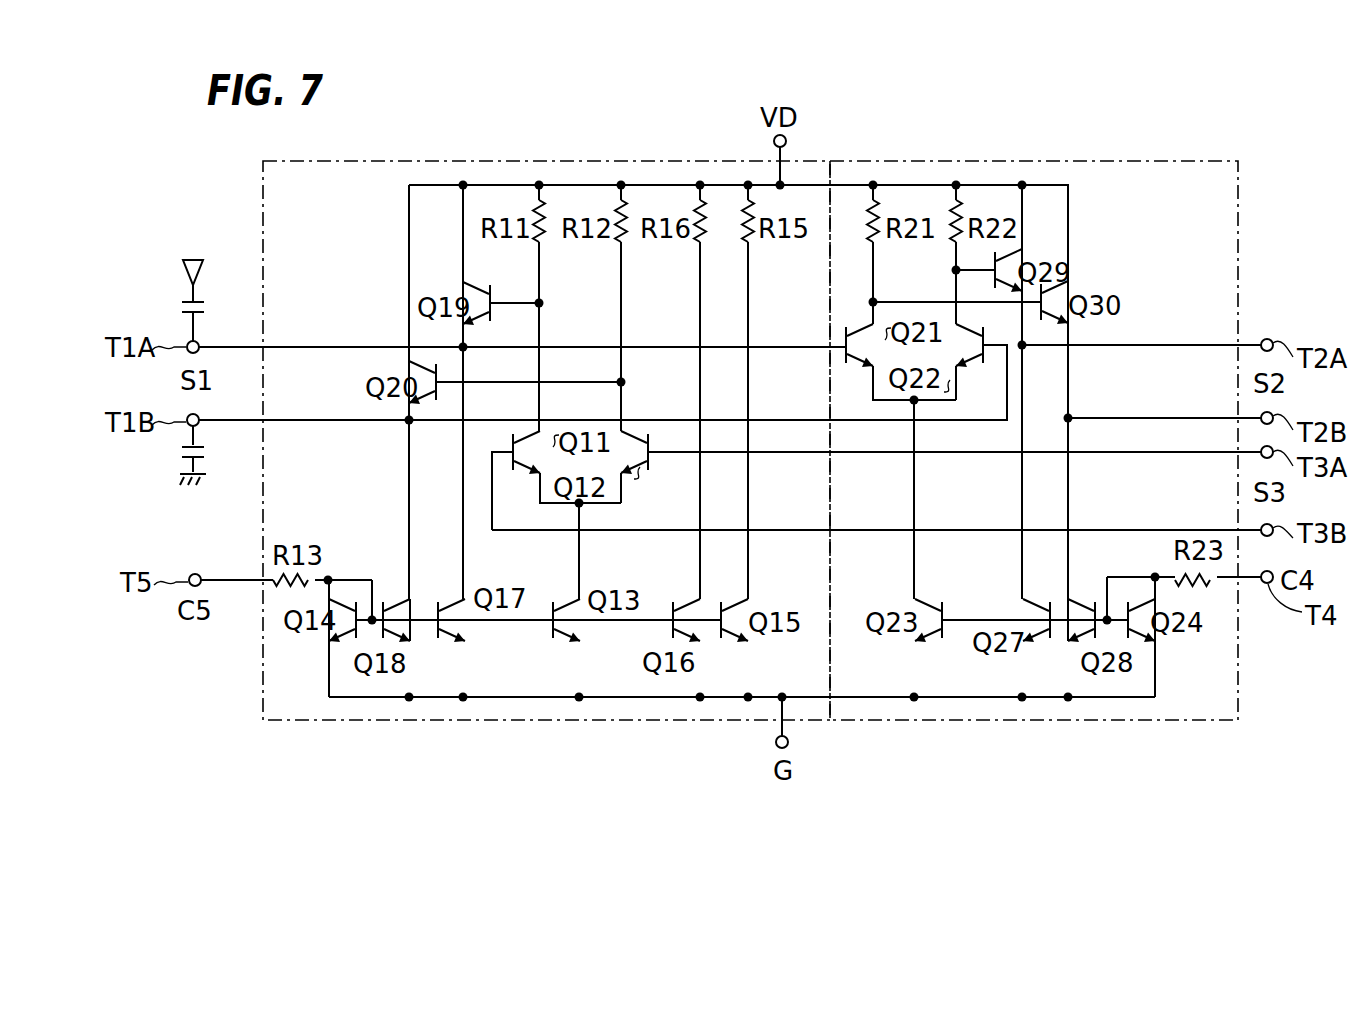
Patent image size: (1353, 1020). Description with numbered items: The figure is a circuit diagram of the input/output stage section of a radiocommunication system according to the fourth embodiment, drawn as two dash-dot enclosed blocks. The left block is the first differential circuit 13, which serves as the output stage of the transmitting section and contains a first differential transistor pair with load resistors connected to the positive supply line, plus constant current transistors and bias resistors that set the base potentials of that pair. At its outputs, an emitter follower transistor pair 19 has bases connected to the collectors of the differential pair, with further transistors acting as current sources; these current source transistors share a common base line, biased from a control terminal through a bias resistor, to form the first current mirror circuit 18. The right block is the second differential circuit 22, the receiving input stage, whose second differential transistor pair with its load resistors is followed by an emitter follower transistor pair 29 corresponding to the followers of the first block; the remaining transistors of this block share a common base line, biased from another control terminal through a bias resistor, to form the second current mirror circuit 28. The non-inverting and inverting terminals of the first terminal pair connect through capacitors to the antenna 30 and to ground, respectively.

The first differential circuit 13 is at (450, 158).
The second differential circuit 22 is at (1135, 160).
The antenna 30 is at (178, 268).
The emitter follower transistor pair 19 is at (385, 322).
The emitter follower transistor pair 29 is at (1112, 283).
The first current mirror circuit 18 is at (320, 696).
The second current mirror circuit 28 is at (1180, 697).